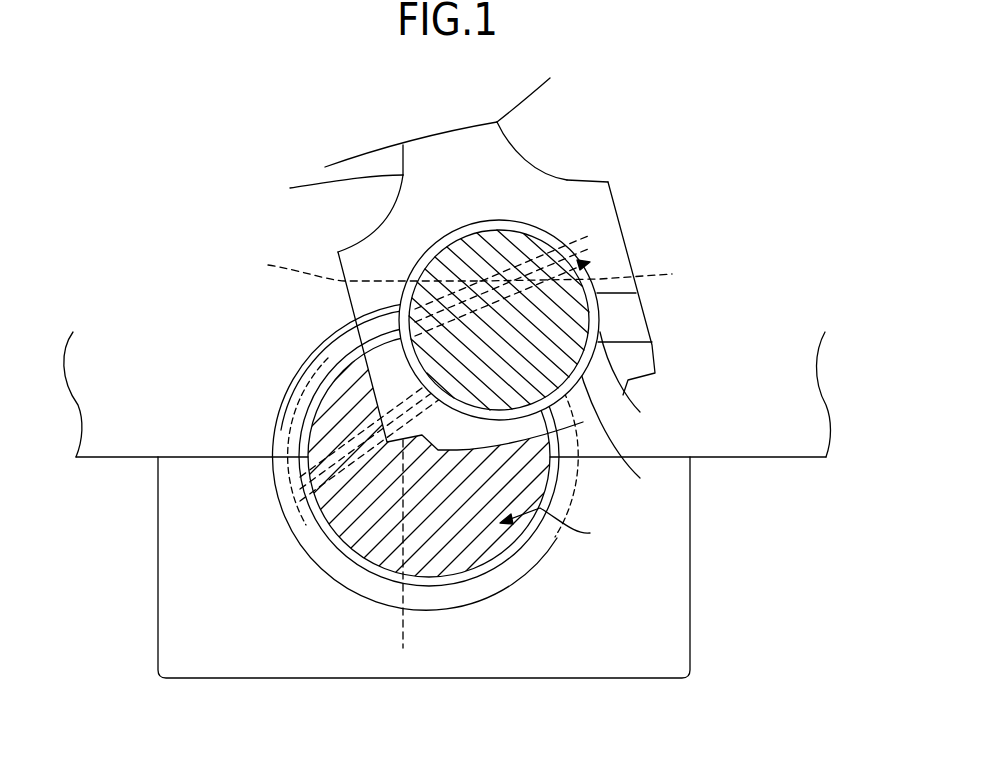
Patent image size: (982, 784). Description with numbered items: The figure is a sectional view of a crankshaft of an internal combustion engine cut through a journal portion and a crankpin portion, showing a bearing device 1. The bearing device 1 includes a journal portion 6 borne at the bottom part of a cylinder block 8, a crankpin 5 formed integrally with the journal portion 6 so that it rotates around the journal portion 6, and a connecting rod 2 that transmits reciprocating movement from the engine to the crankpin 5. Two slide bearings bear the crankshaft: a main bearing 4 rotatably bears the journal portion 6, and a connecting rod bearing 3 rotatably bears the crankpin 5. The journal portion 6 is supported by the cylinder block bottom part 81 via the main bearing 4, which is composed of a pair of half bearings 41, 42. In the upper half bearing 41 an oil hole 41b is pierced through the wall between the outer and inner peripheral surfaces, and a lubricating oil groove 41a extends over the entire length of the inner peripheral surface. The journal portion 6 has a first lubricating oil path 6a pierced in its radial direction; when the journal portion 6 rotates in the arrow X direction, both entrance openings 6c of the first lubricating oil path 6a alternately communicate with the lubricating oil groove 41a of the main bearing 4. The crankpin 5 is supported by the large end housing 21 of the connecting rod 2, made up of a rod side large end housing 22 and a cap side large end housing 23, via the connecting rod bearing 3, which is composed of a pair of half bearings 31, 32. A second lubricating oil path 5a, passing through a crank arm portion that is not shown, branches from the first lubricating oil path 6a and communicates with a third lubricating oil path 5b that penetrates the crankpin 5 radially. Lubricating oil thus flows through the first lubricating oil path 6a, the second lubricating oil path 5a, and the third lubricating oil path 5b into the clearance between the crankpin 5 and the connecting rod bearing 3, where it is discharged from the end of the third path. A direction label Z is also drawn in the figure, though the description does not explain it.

The bearing device 1 is at (158, 190).
The connecting rod 2 is at (417, 165).
The connecting rod bearing 3 is at (553, 308).
The large end housing 21 is at (636, 196).
The rod side large end housing 22 is at (627, 246).
The cap side large end housing 23 is at (645, 322).
The half bearing 31 is at (462, 232).
The half bearing 32 is at (652, 342).
The main bearing 4 is at (337, 450).
The half bearing 41 is at (283, 404).
The lubricating oil groove 41a is at (285, 439).
The oil hole 41b is at (397, 298).
The half bearing 42 is at (292, 527).
The crankpin 5 is at (523, 248).
The second lubricating oil path 5a is at (300, 370).
The third lubricating oil path 5b is at (359, 265).
The journal portion 6 is at (345, 566).
The first lubricating oil path 6a is at (399, 553).
The entrance openings 6c is at (300, 505).
The cylinder block 8 is at (801, 497).
The cylinder block bottom part 81 is at (727, 458).
The arrow X direction X is at (555, 527).
The Z axis direction Z is at (631, 379).